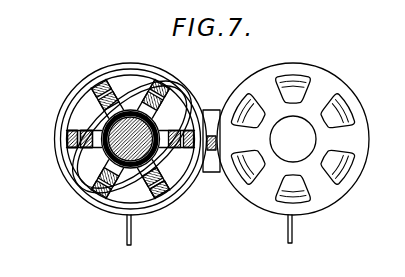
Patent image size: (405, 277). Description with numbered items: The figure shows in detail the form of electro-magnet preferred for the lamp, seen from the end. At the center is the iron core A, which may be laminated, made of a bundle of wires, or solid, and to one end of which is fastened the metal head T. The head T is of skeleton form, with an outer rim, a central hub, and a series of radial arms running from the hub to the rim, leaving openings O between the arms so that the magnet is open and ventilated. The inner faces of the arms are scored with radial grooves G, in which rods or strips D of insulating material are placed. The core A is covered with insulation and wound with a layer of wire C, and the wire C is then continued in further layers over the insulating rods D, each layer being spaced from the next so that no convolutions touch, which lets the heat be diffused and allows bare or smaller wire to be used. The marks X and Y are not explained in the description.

The iron core A is at (209, 139).
The wire C is at (174, 91).
The insulating rods D is at (63, 147).
The radial grooves G is at (167, 202).
The openings O is at (76, 114).
The metal head T is at (137, 214).
The spokes X is at (147, 212).
The connecting block Y is at (215, 109).